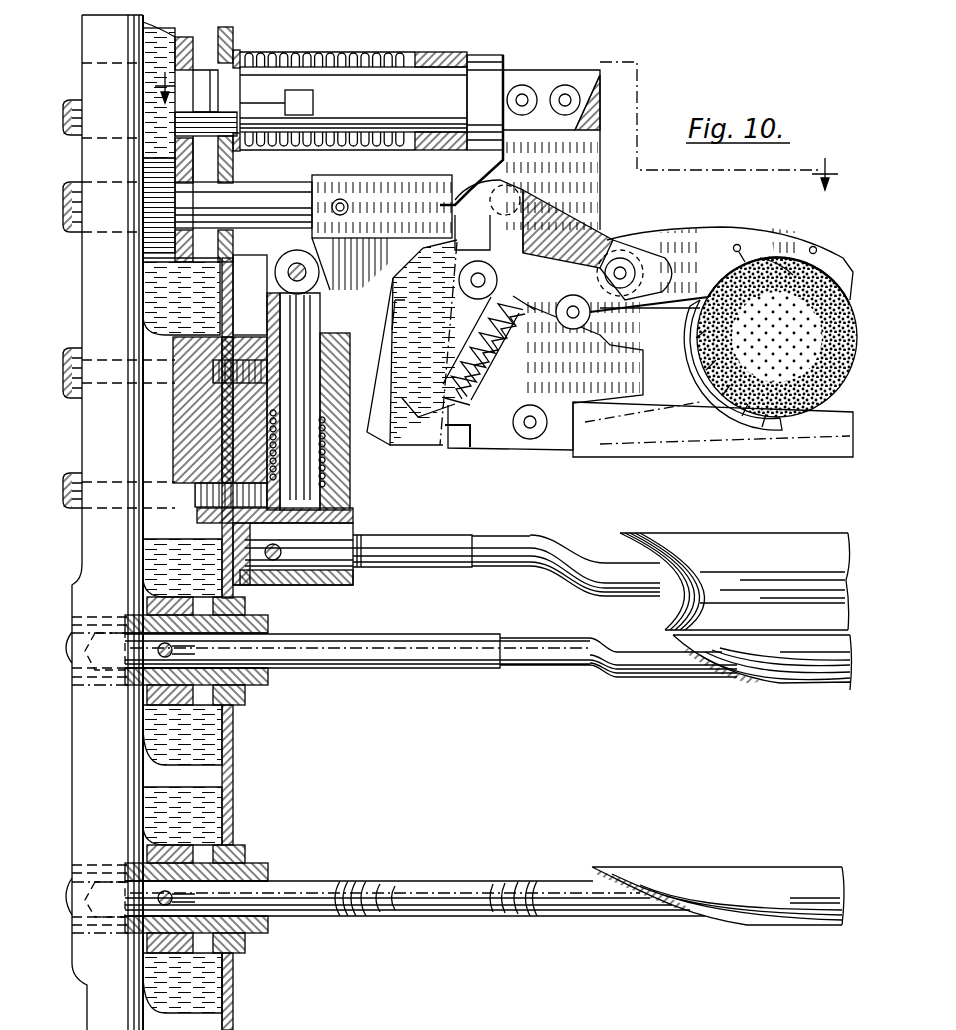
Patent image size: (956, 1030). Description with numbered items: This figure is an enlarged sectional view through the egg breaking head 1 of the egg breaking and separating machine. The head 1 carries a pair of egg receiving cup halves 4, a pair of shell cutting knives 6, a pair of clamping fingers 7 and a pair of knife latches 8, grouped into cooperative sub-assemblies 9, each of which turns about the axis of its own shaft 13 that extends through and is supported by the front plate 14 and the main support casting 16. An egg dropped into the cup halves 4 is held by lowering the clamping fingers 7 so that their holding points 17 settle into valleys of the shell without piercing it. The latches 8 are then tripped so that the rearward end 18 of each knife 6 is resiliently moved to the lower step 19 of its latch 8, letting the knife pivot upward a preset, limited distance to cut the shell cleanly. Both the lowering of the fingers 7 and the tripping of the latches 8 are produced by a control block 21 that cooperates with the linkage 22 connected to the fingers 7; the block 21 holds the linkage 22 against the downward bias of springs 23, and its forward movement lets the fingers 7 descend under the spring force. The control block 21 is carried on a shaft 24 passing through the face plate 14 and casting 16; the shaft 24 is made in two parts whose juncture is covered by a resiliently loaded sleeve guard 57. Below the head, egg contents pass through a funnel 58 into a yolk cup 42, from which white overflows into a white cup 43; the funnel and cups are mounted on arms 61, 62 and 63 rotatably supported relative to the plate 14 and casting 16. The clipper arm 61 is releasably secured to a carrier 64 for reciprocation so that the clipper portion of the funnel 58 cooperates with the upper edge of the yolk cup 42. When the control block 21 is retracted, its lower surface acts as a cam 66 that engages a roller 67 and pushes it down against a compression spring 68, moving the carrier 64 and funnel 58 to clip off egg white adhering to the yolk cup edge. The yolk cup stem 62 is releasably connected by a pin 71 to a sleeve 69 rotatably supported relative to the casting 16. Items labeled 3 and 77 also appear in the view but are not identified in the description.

The egg breaking head 1 is at (652, 98).
The sleeve 3 is at (812, 533).
The egg receiving cup halves 4 is at (731, 359).
The shell cutting knives 6 is at (742, 456).
The clamping fingers 7 is at (770, 236).
The knife latches 8 is at (395, 308).
The sub-assemblies 9 is at (637, 218).
The shaft 13 is at (376, 98).
The front plate 14 is at (236, 820).
The main support casting 16 is at (114, 797).
The holding points 17 is at (794, 262).
The rearward end 18 is at (447, 382).
The lower step 19 is at (447, 447).
The control block 21 is at (487, 148).
The linkage 22 is at (568, 232).
The springs 23 is at (360, 52).
The shaft 24 is at (287, 184).
The yolk cup 42 is at (770, 668).
The white cup 43 is at (690, 846).
The sleeve guard 57 is at (290, 52).
The funnel 58 is at (680, 520).
The funnel or clipper arm 61 is at (442, 534).
The arm 62 is at (385, 668).
The arm 63 is at (538, 878).
The carrier 64 is at (350, 516).
The cam 66 is at (360, 258).
The roller 67 is at (275, 270).
The compression spring 68 is at (326, 454).
The sleeve 69 is at (268, 628).
The pin 71 is at (175, 650).
The pin rod 77 is at (282, 548).